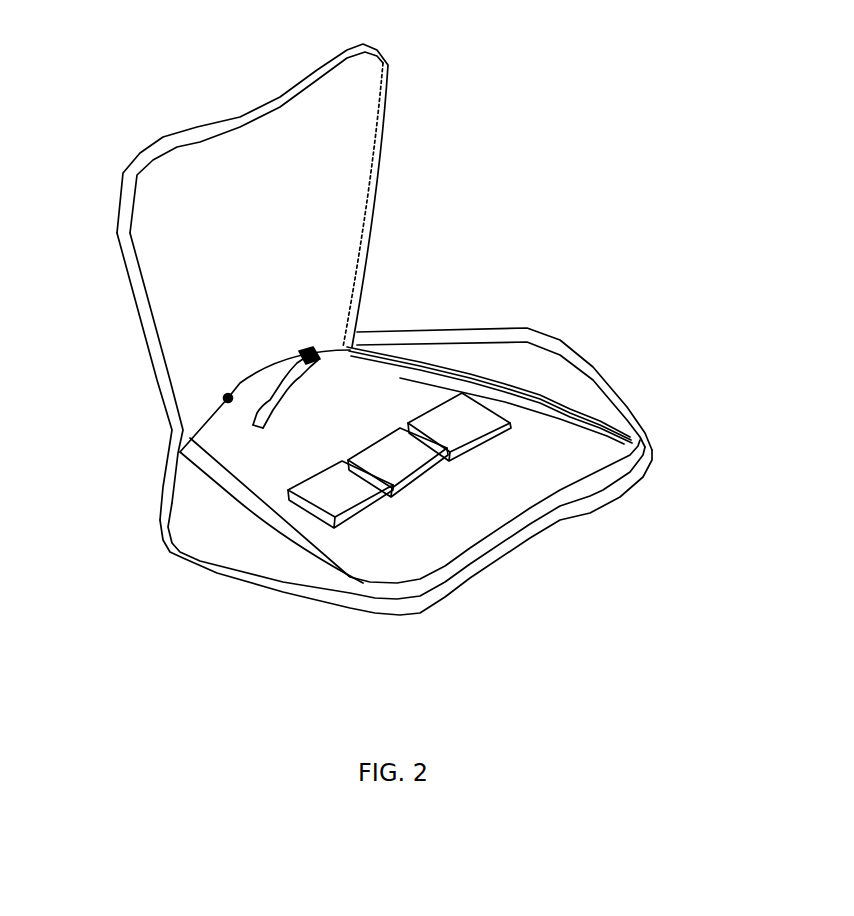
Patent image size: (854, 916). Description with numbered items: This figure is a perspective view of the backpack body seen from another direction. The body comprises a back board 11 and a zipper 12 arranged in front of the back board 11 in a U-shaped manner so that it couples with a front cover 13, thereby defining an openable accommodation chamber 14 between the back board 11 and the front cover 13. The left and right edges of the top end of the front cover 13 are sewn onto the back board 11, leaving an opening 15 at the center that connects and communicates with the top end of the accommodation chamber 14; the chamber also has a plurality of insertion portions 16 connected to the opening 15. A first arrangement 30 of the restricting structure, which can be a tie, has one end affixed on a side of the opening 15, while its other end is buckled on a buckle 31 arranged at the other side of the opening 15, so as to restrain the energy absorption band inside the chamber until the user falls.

The back board 11 is at (197, 534).
The zipper 12 is at (468, 375).
The front cover 13 is at (240, 115).
The accommodation chamber 14 is at (567, 460).
The opening 15 is at (267, 367).
The insertion portions 16 is at (430, 472).
The first arrangement 30 is at (278, 383).
The buckle 31 is at (226, 397).